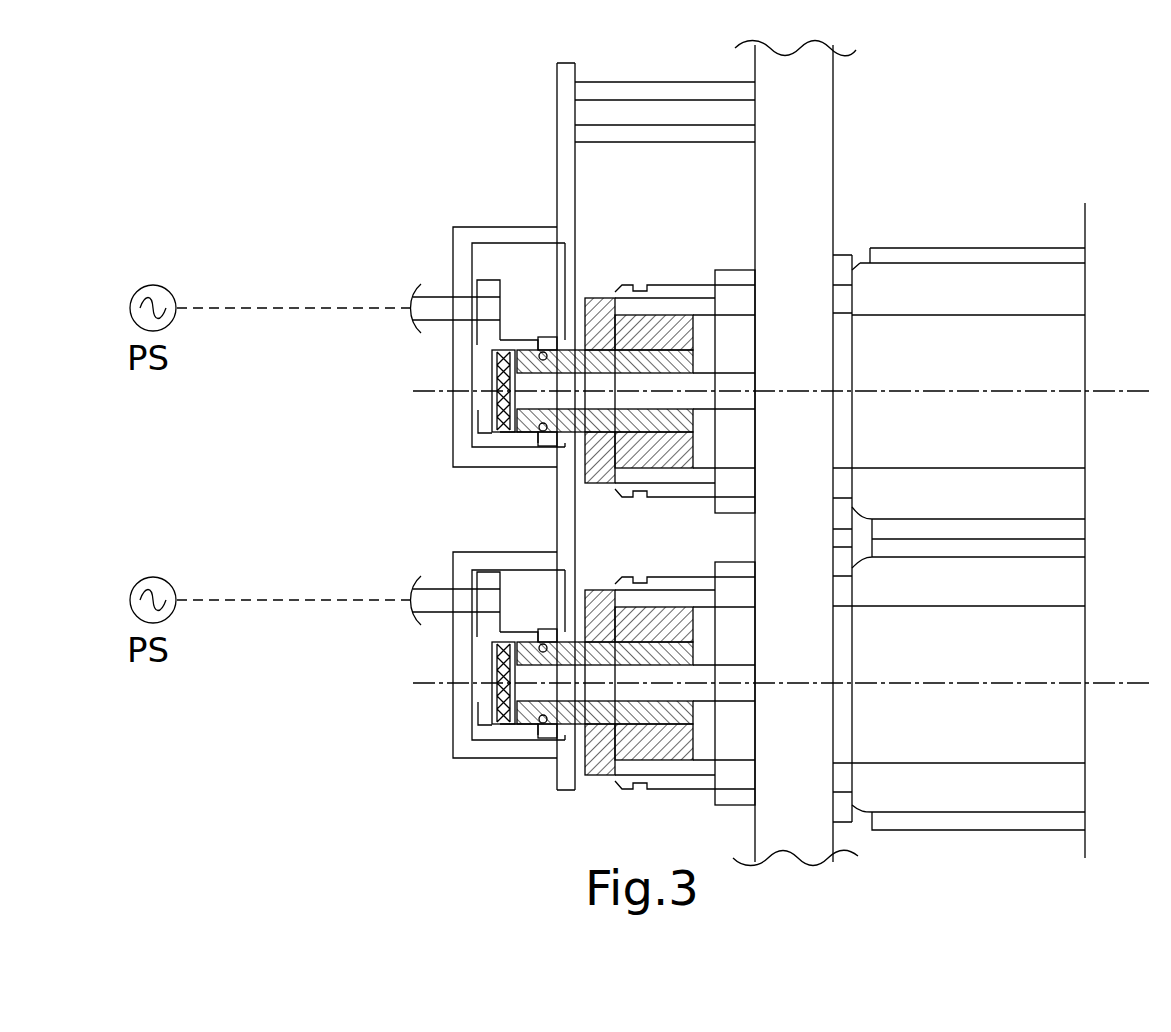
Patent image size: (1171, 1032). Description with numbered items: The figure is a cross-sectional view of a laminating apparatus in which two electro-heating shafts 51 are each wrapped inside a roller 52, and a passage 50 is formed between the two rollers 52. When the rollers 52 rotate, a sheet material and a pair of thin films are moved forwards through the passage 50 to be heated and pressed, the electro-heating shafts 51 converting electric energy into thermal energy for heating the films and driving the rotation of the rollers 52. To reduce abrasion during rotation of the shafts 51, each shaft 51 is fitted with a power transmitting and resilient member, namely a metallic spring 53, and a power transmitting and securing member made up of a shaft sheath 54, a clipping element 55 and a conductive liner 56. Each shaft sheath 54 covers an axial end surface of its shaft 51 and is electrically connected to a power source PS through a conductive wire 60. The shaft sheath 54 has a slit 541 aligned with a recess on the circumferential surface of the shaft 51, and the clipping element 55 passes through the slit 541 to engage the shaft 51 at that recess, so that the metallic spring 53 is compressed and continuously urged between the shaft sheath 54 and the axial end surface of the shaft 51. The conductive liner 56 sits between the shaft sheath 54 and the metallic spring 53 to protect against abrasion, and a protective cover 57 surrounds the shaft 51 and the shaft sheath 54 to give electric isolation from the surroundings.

The passage 50 is at (943, 453).
The electro-heating shaft 51 is at (488, 283).
The roller 52 is at (952, 278).
The metallic spring 53 is at (480, 292).
The shaft sheath 54 is at (470, 290).
The clipping element 55 is at (547, 340).
The conductive liner 56 is at (492, 372).
The protective cover 57 is at (450, 703).
The conductive wire 60 is at (413, 303).
The slit 541 is at (560, 338).